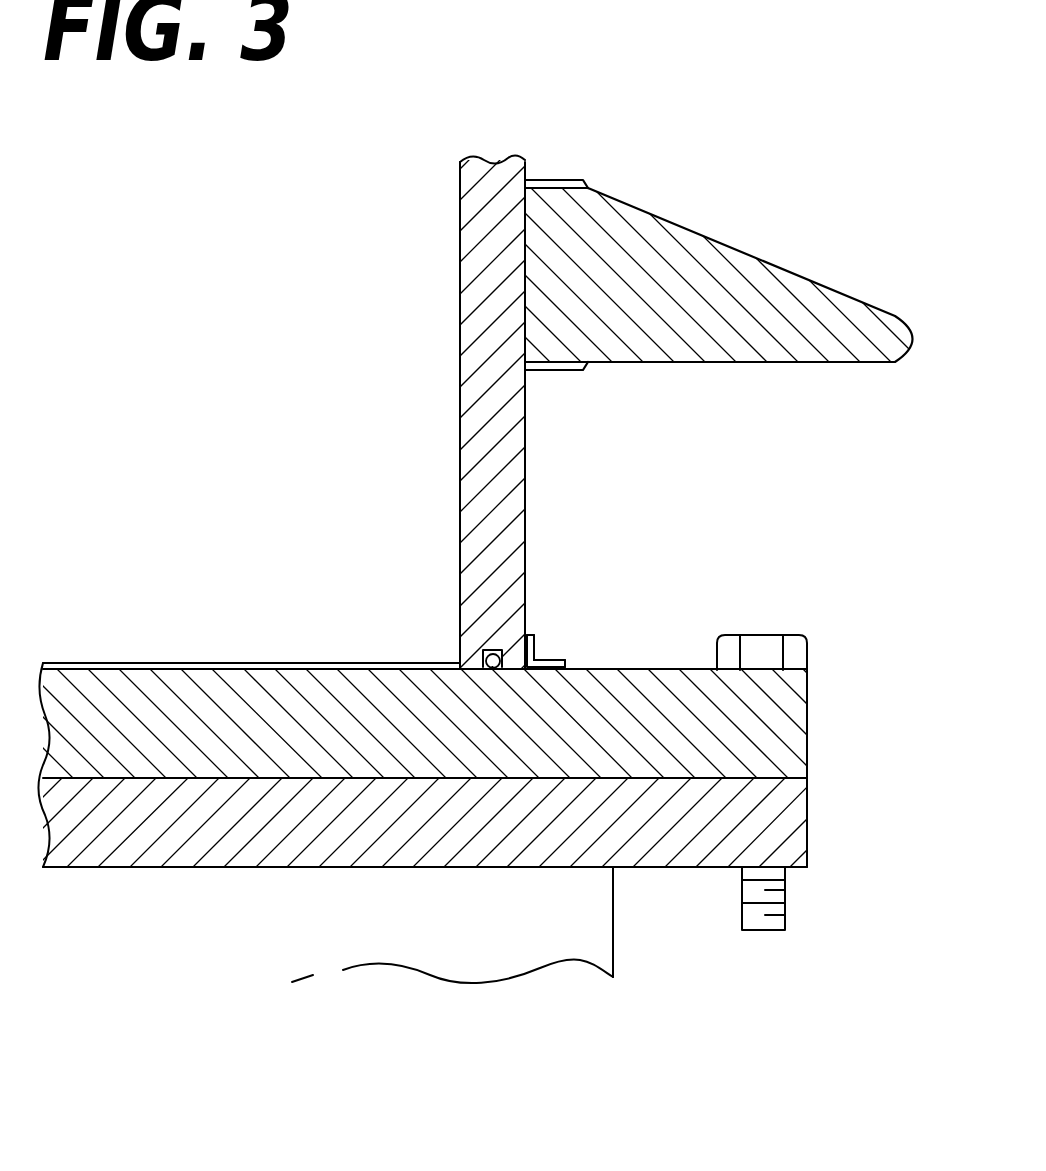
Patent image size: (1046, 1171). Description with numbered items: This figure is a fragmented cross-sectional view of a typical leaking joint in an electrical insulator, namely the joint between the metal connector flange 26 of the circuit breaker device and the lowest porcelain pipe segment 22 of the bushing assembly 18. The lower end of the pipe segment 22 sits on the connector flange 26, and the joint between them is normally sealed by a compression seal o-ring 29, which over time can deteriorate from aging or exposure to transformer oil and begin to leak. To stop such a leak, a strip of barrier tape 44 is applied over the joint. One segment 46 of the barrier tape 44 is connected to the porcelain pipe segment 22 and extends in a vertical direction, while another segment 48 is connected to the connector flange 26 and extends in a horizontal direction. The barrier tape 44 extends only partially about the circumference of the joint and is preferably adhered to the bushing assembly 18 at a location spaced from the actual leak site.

The bushing assembly 18 is at (677, 187).
The porcelain pipe segment 22 is at (526, 432).
The metal connector flange 26 is at (672, 647).
The compression seal o-ring 29 is at (482, 647).
The barrier tape 44 is at (550, 660).
The segment of barrier tape 46 is at (537, 658).
The segment of barrier tape 48 is at (565, 660).